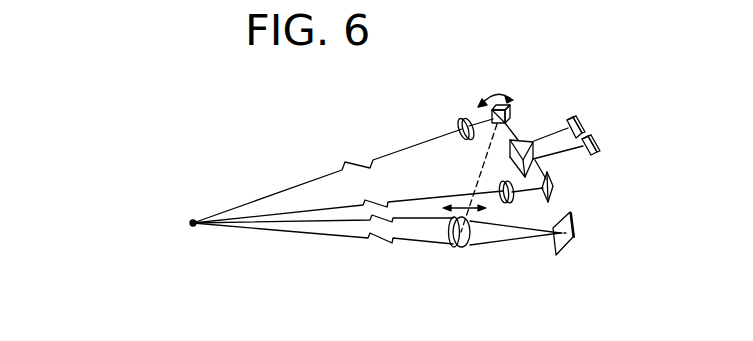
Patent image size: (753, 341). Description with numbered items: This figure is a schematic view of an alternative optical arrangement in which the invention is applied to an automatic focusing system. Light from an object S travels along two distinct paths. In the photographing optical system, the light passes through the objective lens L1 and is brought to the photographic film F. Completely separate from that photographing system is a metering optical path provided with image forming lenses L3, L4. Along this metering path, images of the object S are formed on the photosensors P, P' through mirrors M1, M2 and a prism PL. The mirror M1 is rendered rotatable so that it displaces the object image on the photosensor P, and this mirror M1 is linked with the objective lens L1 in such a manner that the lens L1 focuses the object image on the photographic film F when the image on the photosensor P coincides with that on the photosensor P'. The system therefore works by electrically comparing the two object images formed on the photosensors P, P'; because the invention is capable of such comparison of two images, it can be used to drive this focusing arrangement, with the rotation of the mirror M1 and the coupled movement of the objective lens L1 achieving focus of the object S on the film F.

The object S is at (187, 210).
The image forming lens L3 is at (464, 119).
The rotatable mirror M1 is at (510, 109).
The prism PL is at (529, 139).
The photosensor P is at (594, 115).
The photosensor P' is at (615, 144).
The mirror M2 is at (554, 184).
The image forming lens L4 is at (513, 200).
The photographic film F is at (575, 228).
The objective lens L1 is at (462, 247).